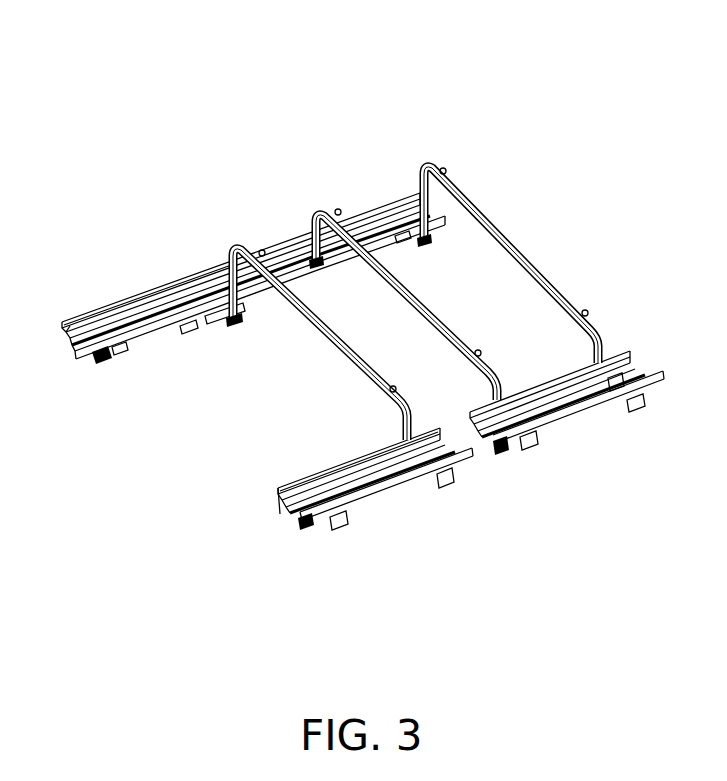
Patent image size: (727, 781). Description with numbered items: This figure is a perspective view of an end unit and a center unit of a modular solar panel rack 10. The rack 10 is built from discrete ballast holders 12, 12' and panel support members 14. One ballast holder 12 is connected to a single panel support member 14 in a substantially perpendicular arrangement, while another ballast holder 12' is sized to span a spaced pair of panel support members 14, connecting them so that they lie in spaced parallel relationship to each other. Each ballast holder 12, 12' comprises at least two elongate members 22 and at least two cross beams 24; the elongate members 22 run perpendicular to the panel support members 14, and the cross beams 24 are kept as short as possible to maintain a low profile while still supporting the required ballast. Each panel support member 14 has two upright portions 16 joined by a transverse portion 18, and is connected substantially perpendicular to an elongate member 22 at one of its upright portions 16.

The solar panel rack 10 is at (274, 84).
The discrete ballast holder 12 is at (267, 385).
The discrete ballast holder 12' is at (490, 308).
The panel support member 14 is at (238, 240).
The upright portion 16 is at (102, 310).
The transverse portion 18 is at (215, 317).
The elongate member 22 is at (280, 505).
The cross beam 24 is at (337, 527).